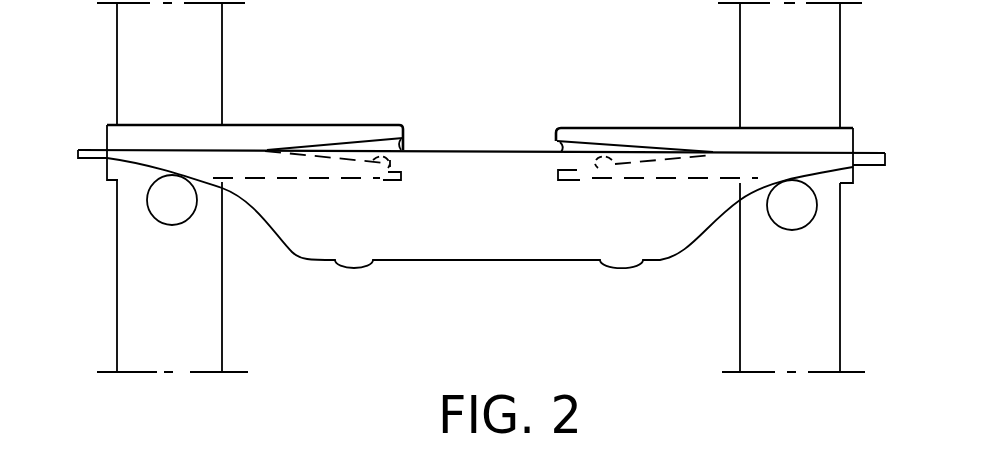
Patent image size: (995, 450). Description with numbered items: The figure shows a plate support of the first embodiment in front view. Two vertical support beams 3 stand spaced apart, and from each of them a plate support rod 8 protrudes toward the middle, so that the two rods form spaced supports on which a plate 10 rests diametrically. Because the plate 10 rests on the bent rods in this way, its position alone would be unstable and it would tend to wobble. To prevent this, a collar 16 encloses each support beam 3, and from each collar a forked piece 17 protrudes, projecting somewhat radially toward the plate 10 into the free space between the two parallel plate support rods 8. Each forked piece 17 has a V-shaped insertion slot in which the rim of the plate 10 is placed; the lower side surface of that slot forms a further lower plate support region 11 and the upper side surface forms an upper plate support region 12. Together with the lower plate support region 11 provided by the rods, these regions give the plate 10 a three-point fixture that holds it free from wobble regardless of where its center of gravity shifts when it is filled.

The support beam 3 is at (160, 48).
The plate support rod 8 is at (170, 200).
The plate 10 is at (498, 261).
The lower plate support region 11 is at (388, 182).
The upper plate support region 12 is at (403, 151).
The collar 16 is at (123, 137).
The forked piece 17 is at (373, 128).